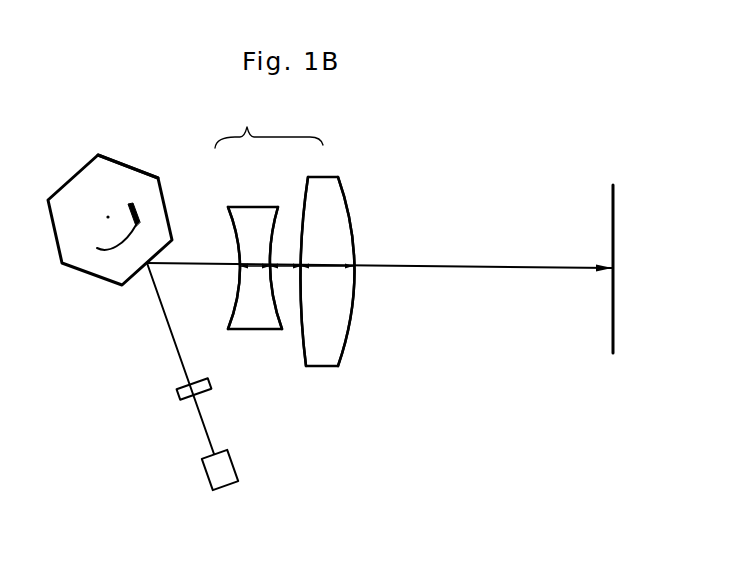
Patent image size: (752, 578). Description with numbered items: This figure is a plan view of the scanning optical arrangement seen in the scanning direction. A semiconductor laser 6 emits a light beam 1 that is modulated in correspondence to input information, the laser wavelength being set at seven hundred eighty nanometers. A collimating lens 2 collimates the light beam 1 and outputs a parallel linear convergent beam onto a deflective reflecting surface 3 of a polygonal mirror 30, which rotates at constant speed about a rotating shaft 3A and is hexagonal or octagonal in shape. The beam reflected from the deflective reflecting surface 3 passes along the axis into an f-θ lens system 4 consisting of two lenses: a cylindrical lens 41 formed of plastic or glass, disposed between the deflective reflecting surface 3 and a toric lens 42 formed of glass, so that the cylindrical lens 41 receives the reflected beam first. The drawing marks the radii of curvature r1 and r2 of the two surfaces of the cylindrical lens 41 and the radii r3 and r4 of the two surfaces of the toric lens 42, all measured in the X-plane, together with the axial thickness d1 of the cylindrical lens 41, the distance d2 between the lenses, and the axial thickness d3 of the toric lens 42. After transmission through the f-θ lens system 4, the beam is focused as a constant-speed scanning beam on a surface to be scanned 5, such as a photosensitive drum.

The light beam 1 is at (436, 268).
The collimating lens 2 is at (182, 397).
The deflective reflecting surface 3 is at (132, 283).
The rotating shaft 3A is at (108, 217).
The polygonal mirror 30 is at (140, 182).
The f-θ lens system 4 is at (292, 251).
The cylindrical lens 41 is at (252, 320).
The toric lens 42 is at (337, 365).
The radius of curvature r1 is at (238, 277).
The radius of curvature r2 is at (278, 224).
The radius of curvature r3 is at (300, 297).
The radius of curvature r4 is at (354, 297).
The axial thickness d1 is at (255, 258).
The distance between the lenses d2 is at (282, 262).
The axial thickness d3 is at (325, 262).
The surface to be scanned 5 is at (616, 228).
The semiconductor laser 6 is at (224, 462).